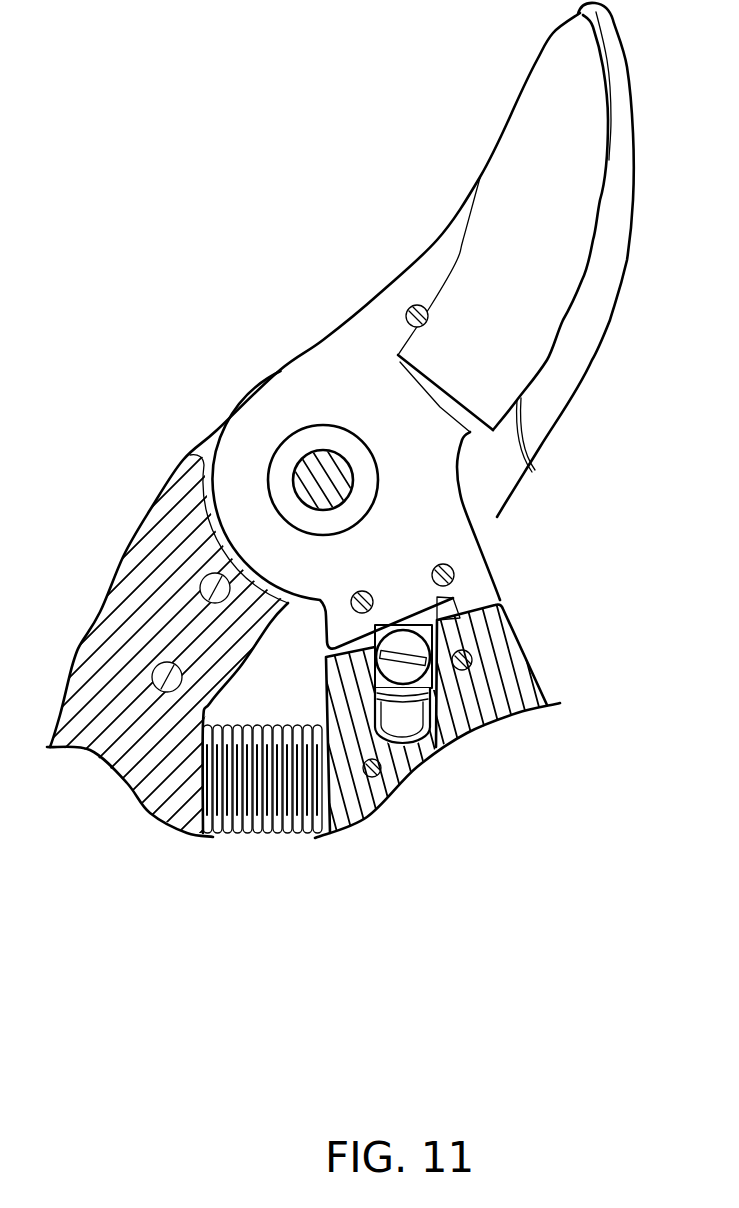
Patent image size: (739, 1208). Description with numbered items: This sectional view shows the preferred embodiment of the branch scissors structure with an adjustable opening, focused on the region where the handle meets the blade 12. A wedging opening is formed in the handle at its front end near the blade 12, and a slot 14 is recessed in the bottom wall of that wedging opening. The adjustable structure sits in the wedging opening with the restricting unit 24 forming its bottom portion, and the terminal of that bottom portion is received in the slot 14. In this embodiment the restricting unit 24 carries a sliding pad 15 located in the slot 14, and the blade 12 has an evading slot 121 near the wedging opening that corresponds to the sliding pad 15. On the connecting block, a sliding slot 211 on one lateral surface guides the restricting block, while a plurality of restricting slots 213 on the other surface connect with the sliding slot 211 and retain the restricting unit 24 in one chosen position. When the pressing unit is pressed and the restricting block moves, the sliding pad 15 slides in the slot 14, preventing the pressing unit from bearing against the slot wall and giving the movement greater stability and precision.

The blade 12 is at (508, 380).
The evading slot 121 is at (450, 596).
The sliding pad 15 is at (425, 632).
The slot 14 is at (383, 713).
The restricting unit 24 is at (413, 673).
The restricting slot 213 is at (422, 713).
The sliding slot 211 is at (408, 718).